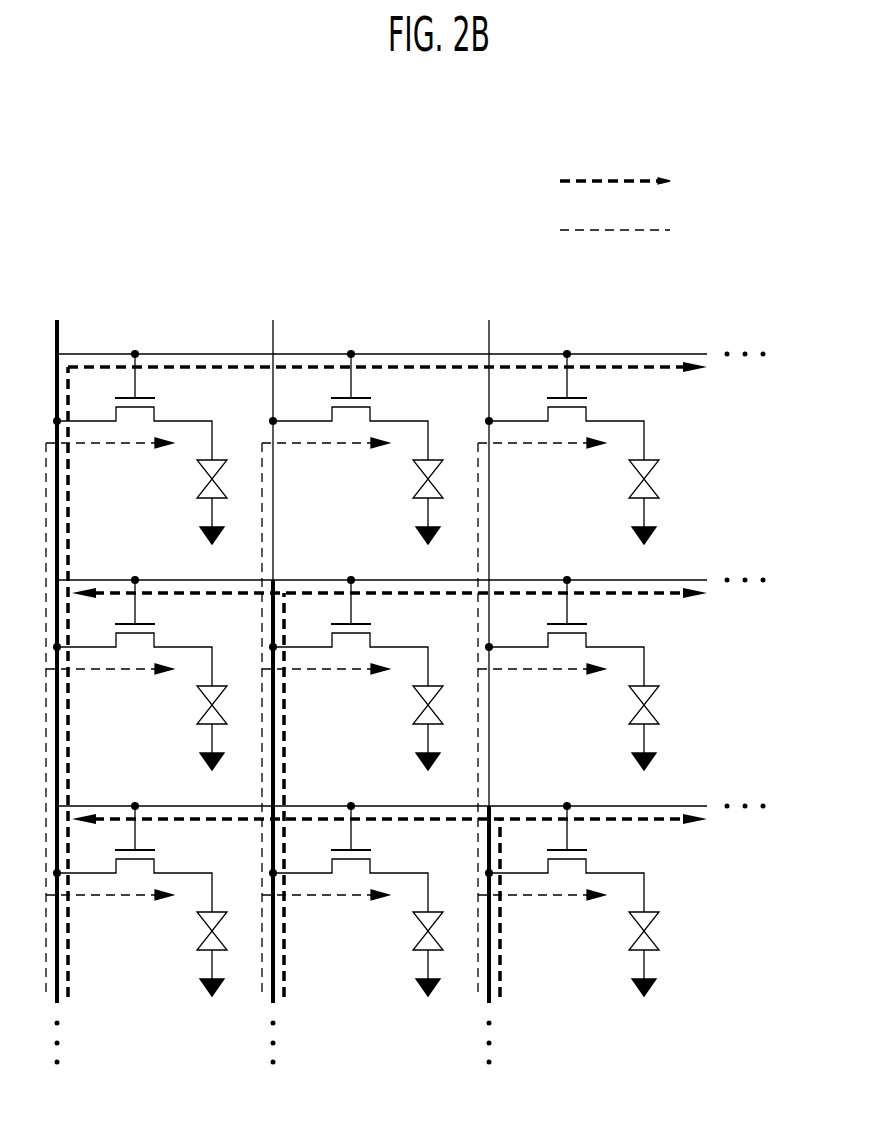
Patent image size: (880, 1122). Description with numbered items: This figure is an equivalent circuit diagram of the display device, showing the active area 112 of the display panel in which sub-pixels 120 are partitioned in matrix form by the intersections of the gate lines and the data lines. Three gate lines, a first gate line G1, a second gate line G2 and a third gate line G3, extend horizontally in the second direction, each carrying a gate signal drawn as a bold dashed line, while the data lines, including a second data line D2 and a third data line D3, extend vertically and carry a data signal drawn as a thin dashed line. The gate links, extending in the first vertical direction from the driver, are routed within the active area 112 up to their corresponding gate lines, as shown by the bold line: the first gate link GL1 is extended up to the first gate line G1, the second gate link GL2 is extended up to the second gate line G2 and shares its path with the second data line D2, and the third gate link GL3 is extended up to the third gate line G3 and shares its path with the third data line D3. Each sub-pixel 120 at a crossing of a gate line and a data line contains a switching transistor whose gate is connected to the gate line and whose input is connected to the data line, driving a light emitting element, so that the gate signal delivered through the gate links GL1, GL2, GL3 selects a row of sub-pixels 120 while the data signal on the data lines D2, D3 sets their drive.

The active area 112 is at (588, 130).
The sub-pixel 120 is at (160, 405).
The first gate line G1 is at (706, 354).
The second gate line G2 is at (706, 580).
The third gate line G3 is at (706, 806).
The first gate link GL1 is at (82, 306).
The second gate link GL2 is at (276, 583).
The third gate link GL3 is at (490, 813).
The second data line D2 is at (273, 322).
The third data line D3 is at (489, 322).